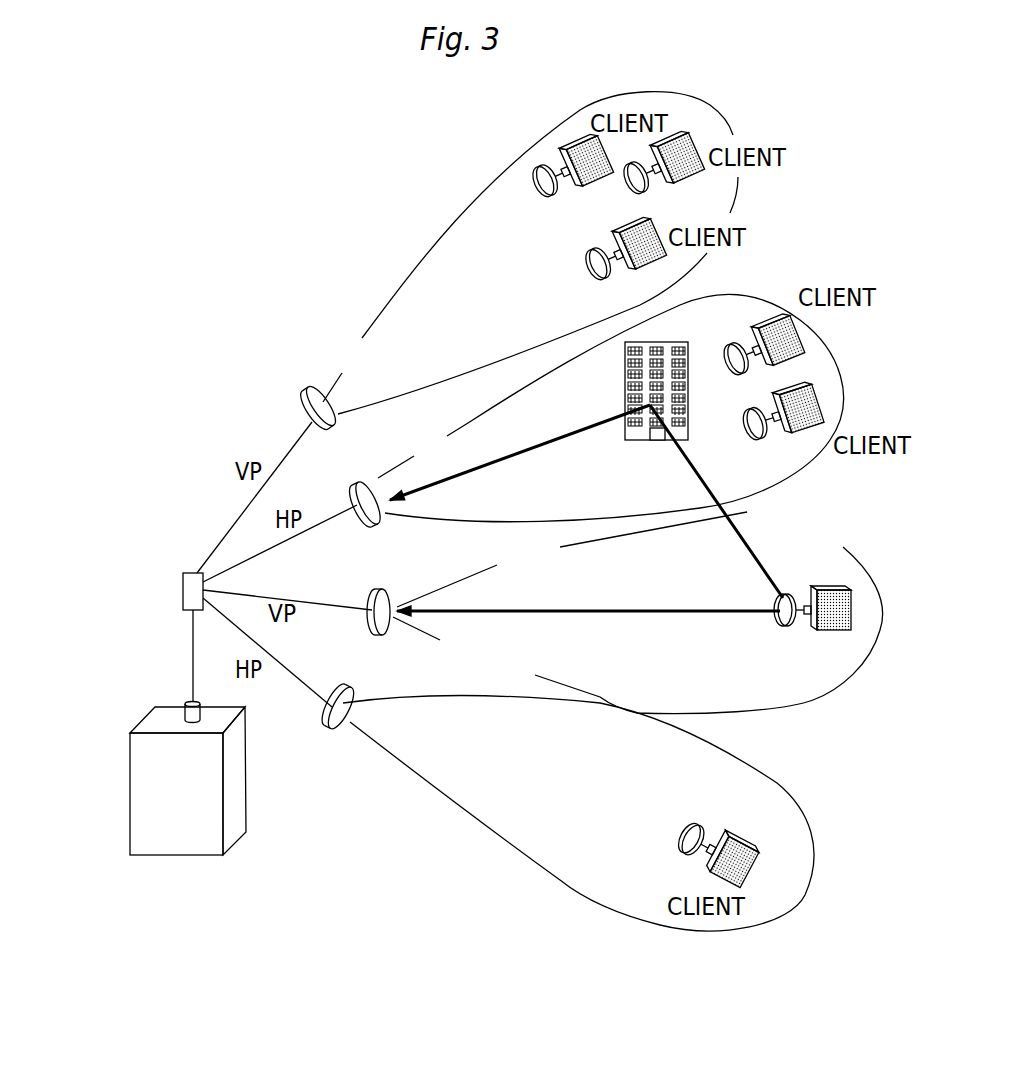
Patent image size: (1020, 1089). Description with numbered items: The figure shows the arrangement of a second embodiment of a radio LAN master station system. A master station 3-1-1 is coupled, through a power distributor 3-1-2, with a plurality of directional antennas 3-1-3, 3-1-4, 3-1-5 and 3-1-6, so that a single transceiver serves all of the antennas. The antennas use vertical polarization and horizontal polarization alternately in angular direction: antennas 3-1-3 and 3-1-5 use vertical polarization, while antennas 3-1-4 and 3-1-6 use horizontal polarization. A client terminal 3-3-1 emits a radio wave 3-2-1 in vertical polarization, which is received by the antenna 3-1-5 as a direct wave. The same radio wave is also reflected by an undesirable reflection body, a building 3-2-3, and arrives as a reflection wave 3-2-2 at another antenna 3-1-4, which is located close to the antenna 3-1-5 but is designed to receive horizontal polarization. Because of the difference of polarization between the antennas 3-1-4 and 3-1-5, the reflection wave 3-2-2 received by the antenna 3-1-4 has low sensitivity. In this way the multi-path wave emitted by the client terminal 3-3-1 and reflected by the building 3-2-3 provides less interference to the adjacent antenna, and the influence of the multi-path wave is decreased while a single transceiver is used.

The master station 3-1-1 is at (240, 767).
The power distributor 3-1-2 is at (130, 572).
The directional antenna 3-1-3 is at (332, 388).
The directional antenna 3-1-4 is at (437, 481).
The directional antenna 3-1-5 is at (424, 587).
The directional antenna 3-1-6 is at (448, 689).
The radio wave 3-2-1 is at (588, 611).
The reflection wave 3-2-2 is at (645, 501).
The building 3-2-3 is at (649, 378).
The client terminal 3-3-1 is at (799, 641).